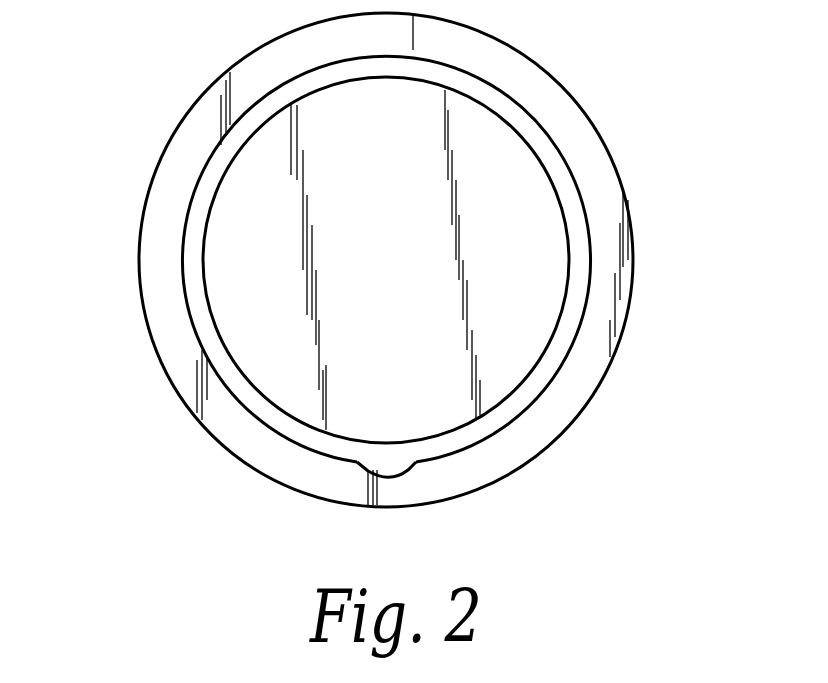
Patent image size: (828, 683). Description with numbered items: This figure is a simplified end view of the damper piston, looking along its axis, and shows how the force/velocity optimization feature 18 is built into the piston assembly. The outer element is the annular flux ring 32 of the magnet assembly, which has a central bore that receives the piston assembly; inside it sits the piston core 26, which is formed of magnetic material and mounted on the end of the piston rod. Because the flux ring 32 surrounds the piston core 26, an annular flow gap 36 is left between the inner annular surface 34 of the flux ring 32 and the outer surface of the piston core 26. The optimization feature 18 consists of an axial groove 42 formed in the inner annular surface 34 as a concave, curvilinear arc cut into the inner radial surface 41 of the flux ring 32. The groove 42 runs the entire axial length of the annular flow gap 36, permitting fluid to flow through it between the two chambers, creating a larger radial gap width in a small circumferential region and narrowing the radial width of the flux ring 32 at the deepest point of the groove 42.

The force/velocity optimization feature 18 is at (237, 368).
The piston core 26 is at (483, 202).
The annular flux ring 32 is at (203, 127).
The inner annular surface 34 is at (556, 363).
The annular flow gap 36 is at (192, 247).
The inner radial surface 41 is at (412, 473).
The groove 42 is at (373, 462).